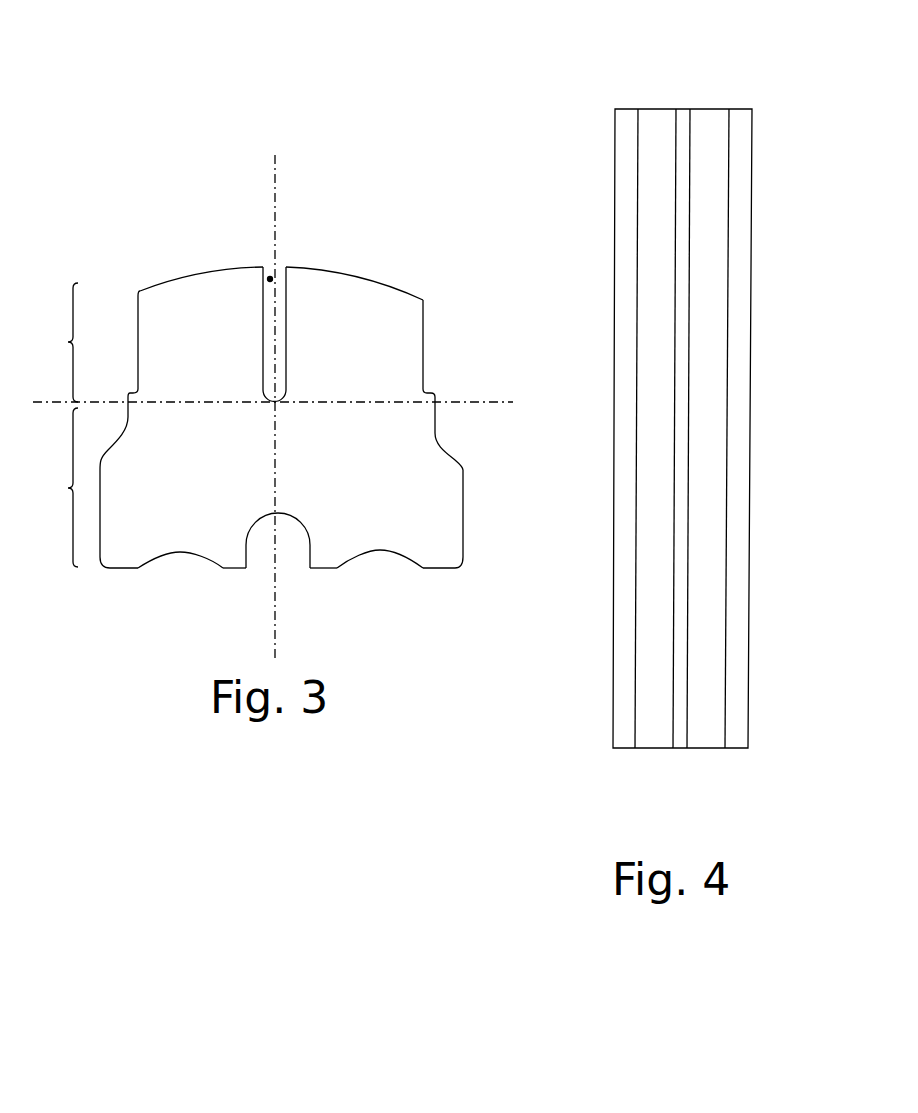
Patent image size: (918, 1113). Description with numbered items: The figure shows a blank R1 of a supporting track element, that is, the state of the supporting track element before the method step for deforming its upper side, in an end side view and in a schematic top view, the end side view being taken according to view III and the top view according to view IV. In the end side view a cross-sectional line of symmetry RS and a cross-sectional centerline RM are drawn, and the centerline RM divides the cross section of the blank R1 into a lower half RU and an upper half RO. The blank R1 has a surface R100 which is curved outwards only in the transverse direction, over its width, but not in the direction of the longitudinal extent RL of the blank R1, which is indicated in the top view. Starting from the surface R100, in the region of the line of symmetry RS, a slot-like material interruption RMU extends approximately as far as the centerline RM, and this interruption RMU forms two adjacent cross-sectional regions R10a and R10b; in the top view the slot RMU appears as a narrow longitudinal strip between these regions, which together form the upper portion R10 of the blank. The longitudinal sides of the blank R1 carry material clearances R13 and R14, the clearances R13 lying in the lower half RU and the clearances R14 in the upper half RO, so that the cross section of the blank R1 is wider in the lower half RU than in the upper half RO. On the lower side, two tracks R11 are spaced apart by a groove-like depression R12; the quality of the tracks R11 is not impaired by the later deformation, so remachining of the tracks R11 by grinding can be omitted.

In FIG. 3, the supporting track element blank R1 is at (332, 145).
In FIG. 4, the supporting track element blank R1 is at (572, 159).
In FIG. 4, the head portion of the rib R10 is at (712, 137).
In FIG. 3, the cross-sectional region R10a is at (208, 328).
In FIG. 3, the cross-sectional region R10b is at (375, 322).
In FIG. 3, the surface R100 is at (360, 266).
In FIG. 3, the tracks R11 is at (175, 553).
In FIG. 3, the groove-like depression R12 is at (287, 517).
In FIG. 3, the material clearances R13 is at (437, 433).
In FIG. 3, the material clearances R14 is at (428, 383).
In FIG. 3, the cross-sectional centerline RM is at (500, 402).
In FIG. 3, the slot-like material interruption RMU is at (270, 279).
In FIG. 4, the slot-like material interruption RMU is at (682, 212).
In FIG. 3, the cross-sectional line of symmetry RS is at (273, 157).
In FIG. 3, the upper half RO is at (51, 342).
In FIG. 3, the lower half RU is at (51, 487).
In FIG. 4, the longitudinal extent RL is at (772, 404).
In FIG. 3, the view IV is at (275, 87).
In FIG. 4, the view III is at (680, 779).